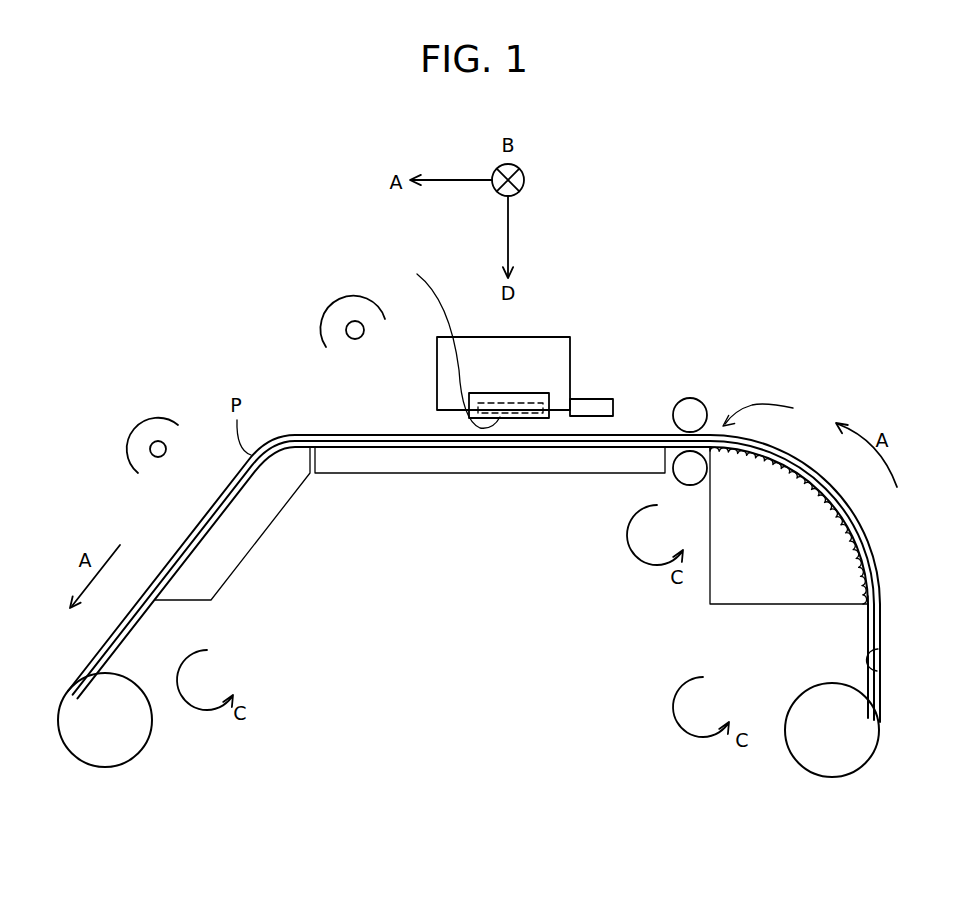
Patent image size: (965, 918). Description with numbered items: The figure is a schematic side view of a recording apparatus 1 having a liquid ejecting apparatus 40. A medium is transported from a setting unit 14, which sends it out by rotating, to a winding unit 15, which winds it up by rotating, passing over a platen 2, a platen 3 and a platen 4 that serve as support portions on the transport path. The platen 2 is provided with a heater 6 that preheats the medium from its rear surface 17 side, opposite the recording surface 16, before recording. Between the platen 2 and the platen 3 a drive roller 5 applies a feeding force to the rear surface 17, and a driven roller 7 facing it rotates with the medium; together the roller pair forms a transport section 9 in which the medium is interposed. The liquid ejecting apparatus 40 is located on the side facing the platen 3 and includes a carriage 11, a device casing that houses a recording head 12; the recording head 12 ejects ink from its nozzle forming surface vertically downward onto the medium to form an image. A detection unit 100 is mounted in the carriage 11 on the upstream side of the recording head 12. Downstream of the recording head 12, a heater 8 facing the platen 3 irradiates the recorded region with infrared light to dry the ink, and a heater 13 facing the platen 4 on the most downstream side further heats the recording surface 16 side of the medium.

The recording apparatus 1 is at (874, 284).
The platen 2 is at (728, 580).
The platen 3 is at (478, 463).
The platen 4 is at (252, 527).
The drive roller 5 is at (680, 463).
The heater 6 is at (853, 567).
The driven roller 7 is at (698, 410).
The heater 8 is at (345, 300).
The transport section 9 is at (767, 412).
The carriage 11 is at (497, 337).
The recording head 12 is at (518, 400).
The heater 13 is at (133, 430).
The setting unit 14 is at (800, 750).
The winding unit 15 is at (137, 738).
The recording surface 16 is at (880, 628).
The rear surface 17 is at (877, 671).
The liquid ejecting apparatus 40 is at (612, 347).
The detection unit 100 is at (587, 417).